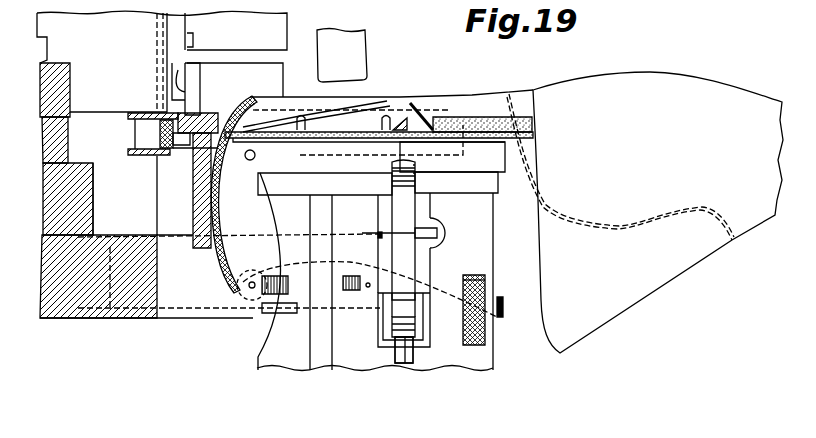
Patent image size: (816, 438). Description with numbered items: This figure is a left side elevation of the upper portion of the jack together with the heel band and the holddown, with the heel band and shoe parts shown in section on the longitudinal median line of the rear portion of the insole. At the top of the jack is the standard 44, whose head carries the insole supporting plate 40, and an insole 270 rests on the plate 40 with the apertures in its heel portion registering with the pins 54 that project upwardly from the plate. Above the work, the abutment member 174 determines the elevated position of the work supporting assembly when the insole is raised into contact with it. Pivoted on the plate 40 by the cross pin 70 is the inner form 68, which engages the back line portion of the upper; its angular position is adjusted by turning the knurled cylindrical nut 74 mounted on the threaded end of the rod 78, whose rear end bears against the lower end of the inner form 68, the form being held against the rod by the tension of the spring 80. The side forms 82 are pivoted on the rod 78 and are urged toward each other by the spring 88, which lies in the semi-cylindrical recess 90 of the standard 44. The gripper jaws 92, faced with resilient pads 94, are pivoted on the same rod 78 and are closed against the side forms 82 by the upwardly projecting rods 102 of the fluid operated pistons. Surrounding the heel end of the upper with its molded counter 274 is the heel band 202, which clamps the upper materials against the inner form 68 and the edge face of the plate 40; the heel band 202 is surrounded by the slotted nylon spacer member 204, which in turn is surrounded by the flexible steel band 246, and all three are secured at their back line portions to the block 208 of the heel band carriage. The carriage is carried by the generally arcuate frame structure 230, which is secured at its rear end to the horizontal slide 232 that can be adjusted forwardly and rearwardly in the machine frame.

The abutment member 174 is at (352, 43).
The block 208 is at (145, 135).
The spacer member 204 is at (188, 117).
The counter 274 is at (258, 122).
The pins 54 is at (302, 117).
The insole 270 is at (457, 130).
The plate 40 is at (480, 157).
The cross pin 70 is at (256, 155).
The side forms 82 is at (400, 160).
The pads 94 is at (418, 172).
The inner form 68 is at (237, 220).
The spring 88 is at (432, 215).
The semi-cylindrical recess 90 is at (447, 233).
The gripper jaws 92 is at (403, 260).
The knurled cylindrical nut 74 is at (478, 288).
The rod 78 is at (503, 308).
The rods 102 is at (402, 365).
The spring 80 is at (282, 293).
The frame structure 230 is at (203, 318).
The slide 232 is at (55, 318).
The flexible steel band 246 is at (178, 135).
The heel band 202 is at (200, 193).
The standard 44 is at (482, 390).